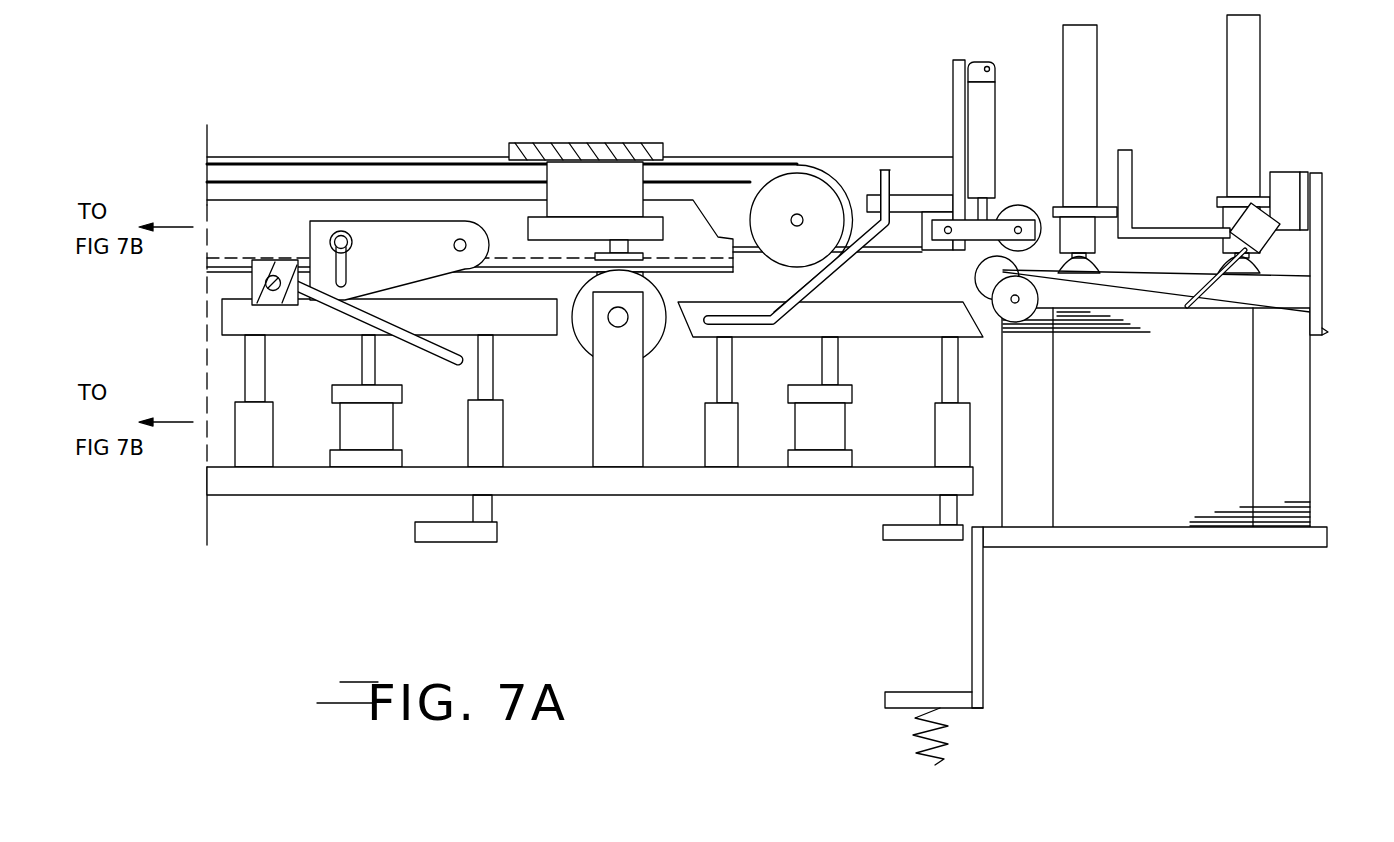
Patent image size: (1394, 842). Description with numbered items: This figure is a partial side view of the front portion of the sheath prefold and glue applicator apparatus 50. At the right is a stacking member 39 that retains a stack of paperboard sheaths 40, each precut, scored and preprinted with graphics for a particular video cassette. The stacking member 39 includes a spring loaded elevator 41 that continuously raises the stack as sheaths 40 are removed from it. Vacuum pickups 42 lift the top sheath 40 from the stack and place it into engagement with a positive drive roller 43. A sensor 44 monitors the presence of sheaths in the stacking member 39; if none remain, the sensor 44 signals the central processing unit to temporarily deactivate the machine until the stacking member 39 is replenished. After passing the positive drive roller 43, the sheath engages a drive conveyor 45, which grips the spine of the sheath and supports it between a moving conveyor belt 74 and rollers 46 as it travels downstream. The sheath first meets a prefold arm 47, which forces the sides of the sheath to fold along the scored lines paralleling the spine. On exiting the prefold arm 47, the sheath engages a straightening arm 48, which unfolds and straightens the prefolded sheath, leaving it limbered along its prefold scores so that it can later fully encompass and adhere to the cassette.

The stacking member 39 is at (1145, 546).
The sheath 40 is at (1142, 292).
The spring loaded elevator 41 is at (1065, 537).
The vacuum pickups 42 is at (1323, 60).
The positive drive roller 43 is at (1018, 206).
The sensor 44 is at (1310, 277).
The drive conveyor 45 is at (802, 192).
The rollers 46 is at (580, 328).
The prefold arm 47 is at (793, 318).
The straightening arm 48 is at (435, 353).
The sheath prefold and glue applicator apparatus 50 is at (748, 500).
The moving conveyor belt 74 is at (750, 270).